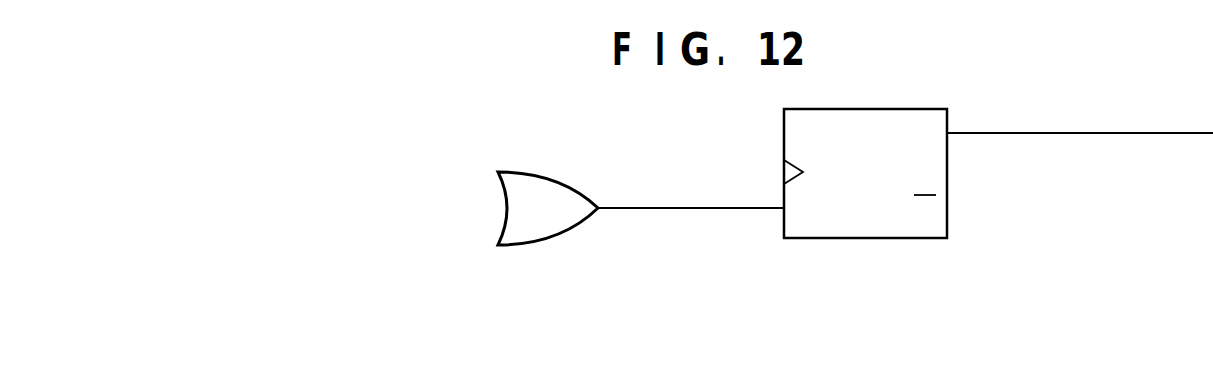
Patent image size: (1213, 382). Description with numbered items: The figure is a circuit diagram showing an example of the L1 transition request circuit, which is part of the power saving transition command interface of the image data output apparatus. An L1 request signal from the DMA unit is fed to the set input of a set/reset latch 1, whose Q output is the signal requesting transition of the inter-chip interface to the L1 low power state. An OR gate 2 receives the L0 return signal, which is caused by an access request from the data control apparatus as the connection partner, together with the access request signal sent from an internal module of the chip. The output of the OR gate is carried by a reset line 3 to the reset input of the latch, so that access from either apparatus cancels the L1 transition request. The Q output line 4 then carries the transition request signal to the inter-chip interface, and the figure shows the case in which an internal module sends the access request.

The SR flip-flop (SET/CLR latch) receiving L1 REQUEST SIGNAL 1 is at (784, 133).
The OR gate receiving L1toL0 and AccessRequest 2 is at (508, 192).
The reset line from OR gate to R input 3 is at (508, 225).
The Q output line to L1 4 is at (1080, 118).